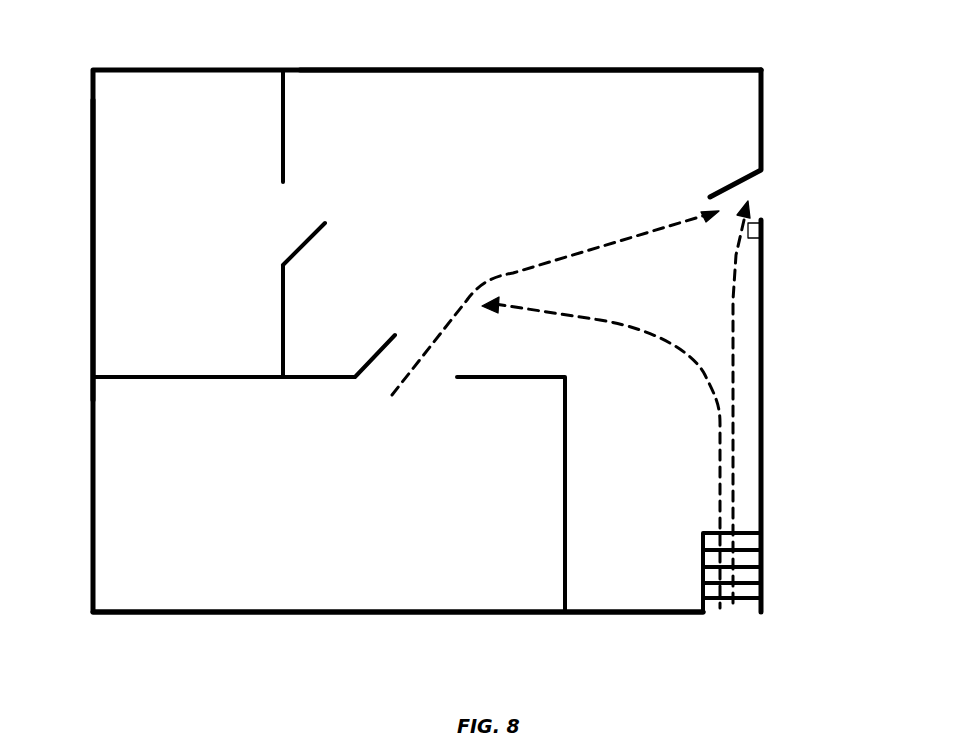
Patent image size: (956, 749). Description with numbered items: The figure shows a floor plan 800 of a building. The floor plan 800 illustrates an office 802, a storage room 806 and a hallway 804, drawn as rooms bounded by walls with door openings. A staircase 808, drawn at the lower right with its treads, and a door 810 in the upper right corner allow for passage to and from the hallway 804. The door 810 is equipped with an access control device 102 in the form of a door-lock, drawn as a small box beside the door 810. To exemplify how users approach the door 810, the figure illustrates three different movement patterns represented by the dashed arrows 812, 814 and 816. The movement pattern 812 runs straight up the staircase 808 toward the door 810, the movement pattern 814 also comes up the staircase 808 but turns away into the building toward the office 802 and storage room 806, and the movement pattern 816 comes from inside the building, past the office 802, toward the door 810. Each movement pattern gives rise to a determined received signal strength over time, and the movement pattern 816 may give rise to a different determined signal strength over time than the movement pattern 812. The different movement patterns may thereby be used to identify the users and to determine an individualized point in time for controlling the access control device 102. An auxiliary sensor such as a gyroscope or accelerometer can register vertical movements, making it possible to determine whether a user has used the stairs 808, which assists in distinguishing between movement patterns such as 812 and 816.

The floor plan 800 is at (245, 152).
The office 802 is at (210, 592).
The hallway 804 is at (667, 110).
The storage room 806 is at (131, 196).
The staircase 808 is at (745, 577).
The door 810 is at (758, 173).
The movement pattern 812 is at (733, 385).
The movement pattern 814 is at (703, 371).
The movement pattern 816 is at (513, 273).
The access control device 102 is at (761, 228).